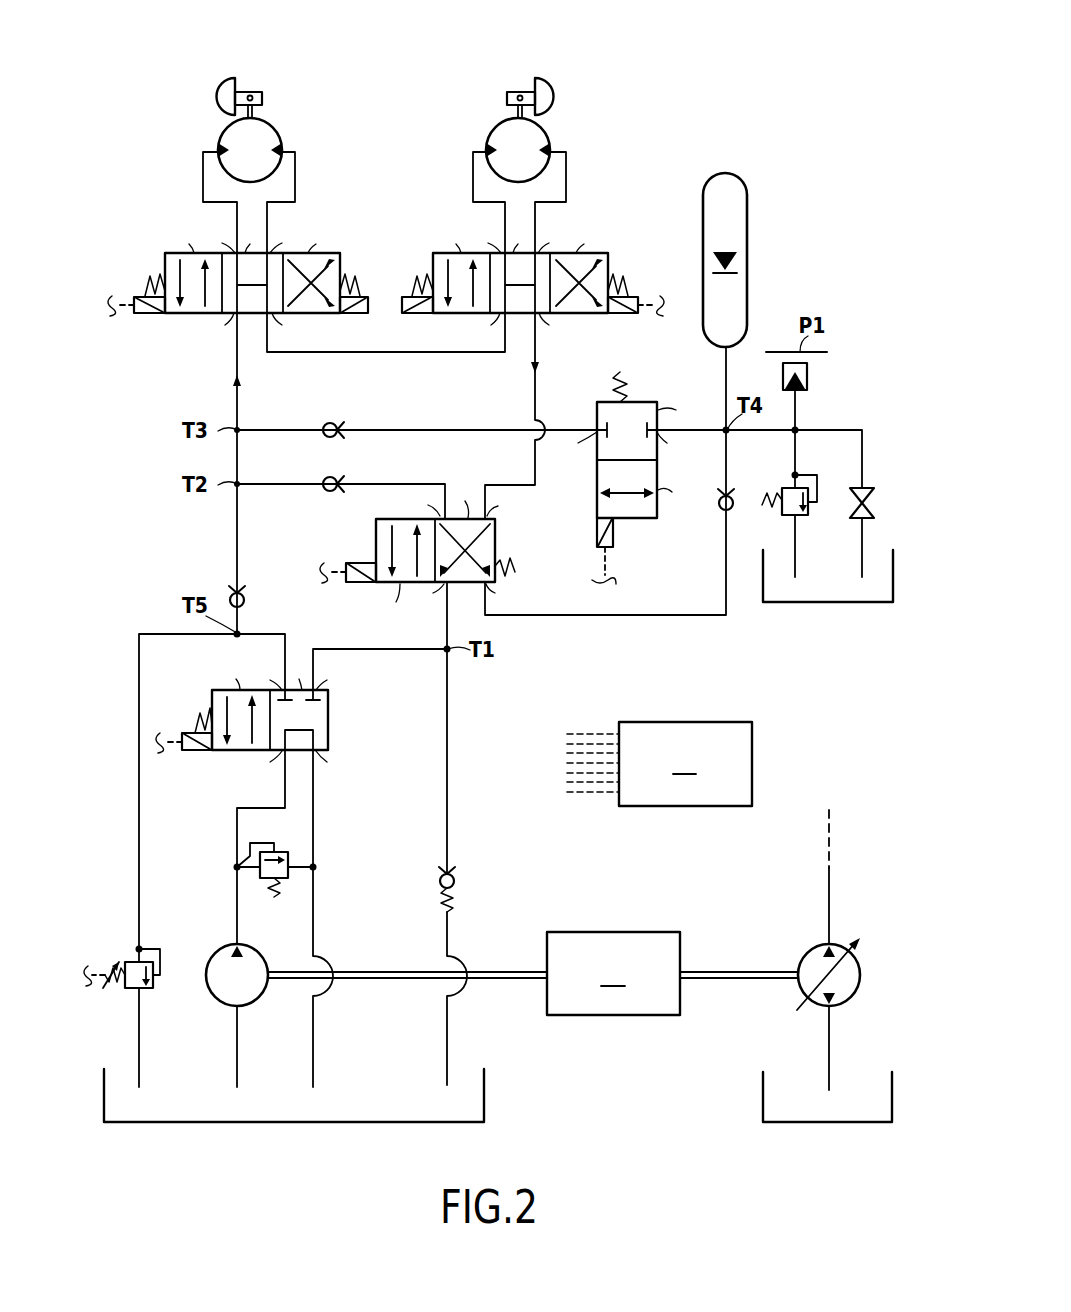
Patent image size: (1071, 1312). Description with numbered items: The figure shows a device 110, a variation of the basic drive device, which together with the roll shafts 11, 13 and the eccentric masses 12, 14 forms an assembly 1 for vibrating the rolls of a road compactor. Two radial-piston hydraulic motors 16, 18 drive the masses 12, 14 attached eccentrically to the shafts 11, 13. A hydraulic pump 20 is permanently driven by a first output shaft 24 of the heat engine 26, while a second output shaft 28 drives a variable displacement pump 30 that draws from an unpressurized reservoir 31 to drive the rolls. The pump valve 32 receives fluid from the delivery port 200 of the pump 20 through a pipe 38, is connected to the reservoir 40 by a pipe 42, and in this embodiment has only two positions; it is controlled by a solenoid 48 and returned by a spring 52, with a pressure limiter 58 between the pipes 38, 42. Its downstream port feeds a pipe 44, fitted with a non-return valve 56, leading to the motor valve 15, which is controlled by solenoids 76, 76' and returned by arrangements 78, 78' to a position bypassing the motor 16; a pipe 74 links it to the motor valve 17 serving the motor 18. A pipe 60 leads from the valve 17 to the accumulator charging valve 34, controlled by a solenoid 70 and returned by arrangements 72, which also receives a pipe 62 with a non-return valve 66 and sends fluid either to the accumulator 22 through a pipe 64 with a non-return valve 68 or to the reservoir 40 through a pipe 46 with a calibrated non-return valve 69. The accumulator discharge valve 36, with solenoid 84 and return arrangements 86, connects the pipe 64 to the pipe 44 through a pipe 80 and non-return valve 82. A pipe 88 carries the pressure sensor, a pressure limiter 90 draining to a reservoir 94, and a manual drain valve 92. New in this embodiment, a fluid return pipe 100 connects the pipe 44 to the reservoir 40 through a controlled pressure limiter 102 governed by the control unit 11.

The assembly 1 is at (837, 58).
The shaft / control unit 11 is at (246, 90).
The eccentric mass 12 is at (222, 86).
The shaft 13 is at (520, 89).
The eccentric mass 14 is at (550, 88).
The motor valve 15 is at (250, 307).
The radial-piston hydraulic motor 16 is at (221, 133).
The motor valve 17 is at (609, 248).
The radial-piston hydraulic motor 18 is at (491, 133).
The hydraulic pump 20 is at (222, 950).
The fluid accumulator 22 is at (748, 222).
The first output shaft 24 is at (380, 970).
The heat engine 26 is at (613, 973).
The second output shaft 28 is at (739, 971).
The variable displacement pump 30 is at (820, 946).
The unpressurized reservoir 31 is at (763, 1092).
The pump valve 32 is at (282, 723).
The accumulator charging valve 34 is at (436, 558).
The accumulator discharge valve 36 is at (628, 461).
The pipe 38 is at (237, 836).
The unpressurized reservoir 40 is at (485, 1095).
The pipe 42 is at (313, 846).
The pipe 44 is at (237, 458).
The pipe 46 is at (447, 771).
The solenoid 48 is at (198, 750).
The return spring 52 is at (197, 716).
The non-return valve 56 is at (245, 597).
The pressure limiter 58 is at (285, 852).
The pipe 60 is at (535, 386).
The pipe 62 is at (280, 484).
The pipe 64 is at (726, 592).
The non-return valve 66 is at (325, 477).
The non-return valve 68 is at (718, 510).
The calibrated non-return valve 69 is at (456, 880).
The solenoid 70 is at (356, 562).
The return arrangements 72 is at (512, 560).
The pipe 74 is at (402, 352).
The solenoid 76 is at (356, 321).
The solenoid 76' is at (136, 321).
The return arrangements 78 is at (366, 271).
The return arrangements 78' is at (138, 271).
The pipe 80 is at (565, 430).
The non-return valve 82 is at (325, 423).
The solenoid 84 is at (613, 536).
The return arrangements 86 is at (618, 378).
The pipe 88 is at (763, 432).
The pressure limiter 90 is at (805, 516).
The manual drain valve 92 is at (875, 504).
The reservoir 94 is at (826, 603).
The fluid return pipe 100 is at (139, 842).
The controlled pressure limiter 102 is at (155, 989).
The device 110 is at (737, 142).
The delivery port 200 is at (238, 944).